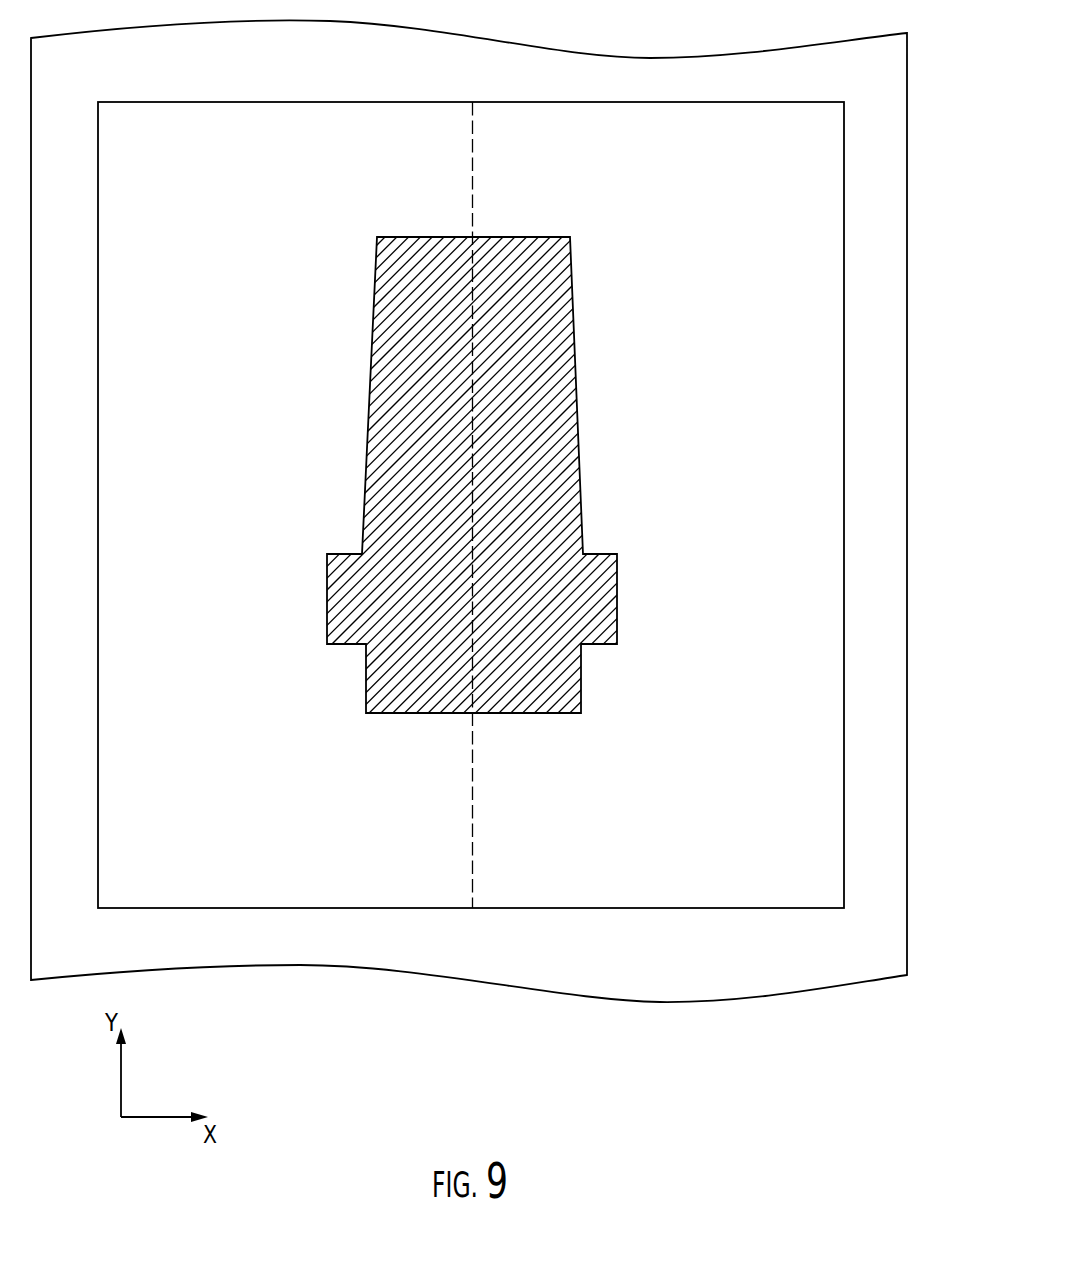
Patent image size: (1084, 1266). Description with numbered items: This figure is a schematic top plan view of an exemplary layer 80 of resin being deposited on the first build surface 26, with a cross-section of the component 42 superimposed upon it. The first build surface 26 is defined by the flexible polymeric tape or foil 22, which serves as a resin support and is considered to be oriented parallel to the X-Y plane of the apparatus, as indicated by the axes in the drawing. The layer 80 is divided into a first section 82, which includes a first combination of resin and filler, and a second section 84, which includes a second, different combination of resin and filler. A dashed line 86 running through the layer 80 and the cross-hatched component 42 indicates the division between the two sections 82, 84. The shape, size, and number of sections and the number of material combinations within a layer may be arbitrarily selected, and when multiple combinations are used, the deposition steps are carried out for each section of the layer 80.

The foil 22 is at (908, 463).
The first build surface 26 is at (880, 323).
The component 42 is at (556, 268).
The layer 80 is at (565, 147).
The first section 82 is at (221, 260).
The second section 84 is at (780, 252).
The dashed line 86 is at (471, 172).